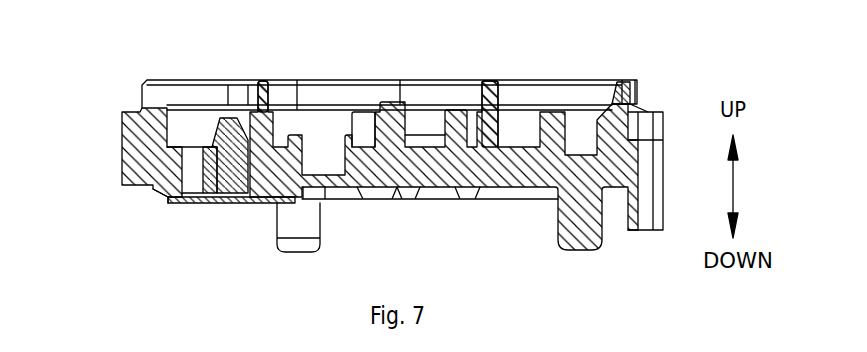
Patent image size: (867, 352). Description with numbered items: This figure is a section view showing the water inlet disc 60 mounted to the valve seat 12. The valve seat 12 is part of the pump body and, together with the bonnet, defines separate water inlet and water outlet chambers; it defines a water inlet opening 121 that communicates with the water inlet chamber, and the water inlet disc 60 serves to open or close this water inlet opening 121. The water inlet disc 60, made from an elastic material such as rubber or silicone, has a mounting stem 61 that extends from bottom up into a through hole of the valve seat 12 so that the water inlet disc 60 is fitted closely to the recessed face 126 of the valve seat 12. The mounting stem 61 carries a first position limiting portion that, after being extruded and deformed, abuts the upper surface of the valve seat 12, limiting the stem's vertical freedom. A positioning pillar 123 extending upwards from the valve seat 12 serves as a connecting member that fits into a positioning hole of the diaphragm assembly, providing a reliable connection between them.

The valve seat 12 is at (621, 122).
The positioning pillar 123 is at (490, 112).
The water inlet opening 121 is at (192, 171).
The recessed face 126 is at (168, 203).
The mounting stem 61 is at (225, 155).
The water inlet disc 60 is at (230, 205).